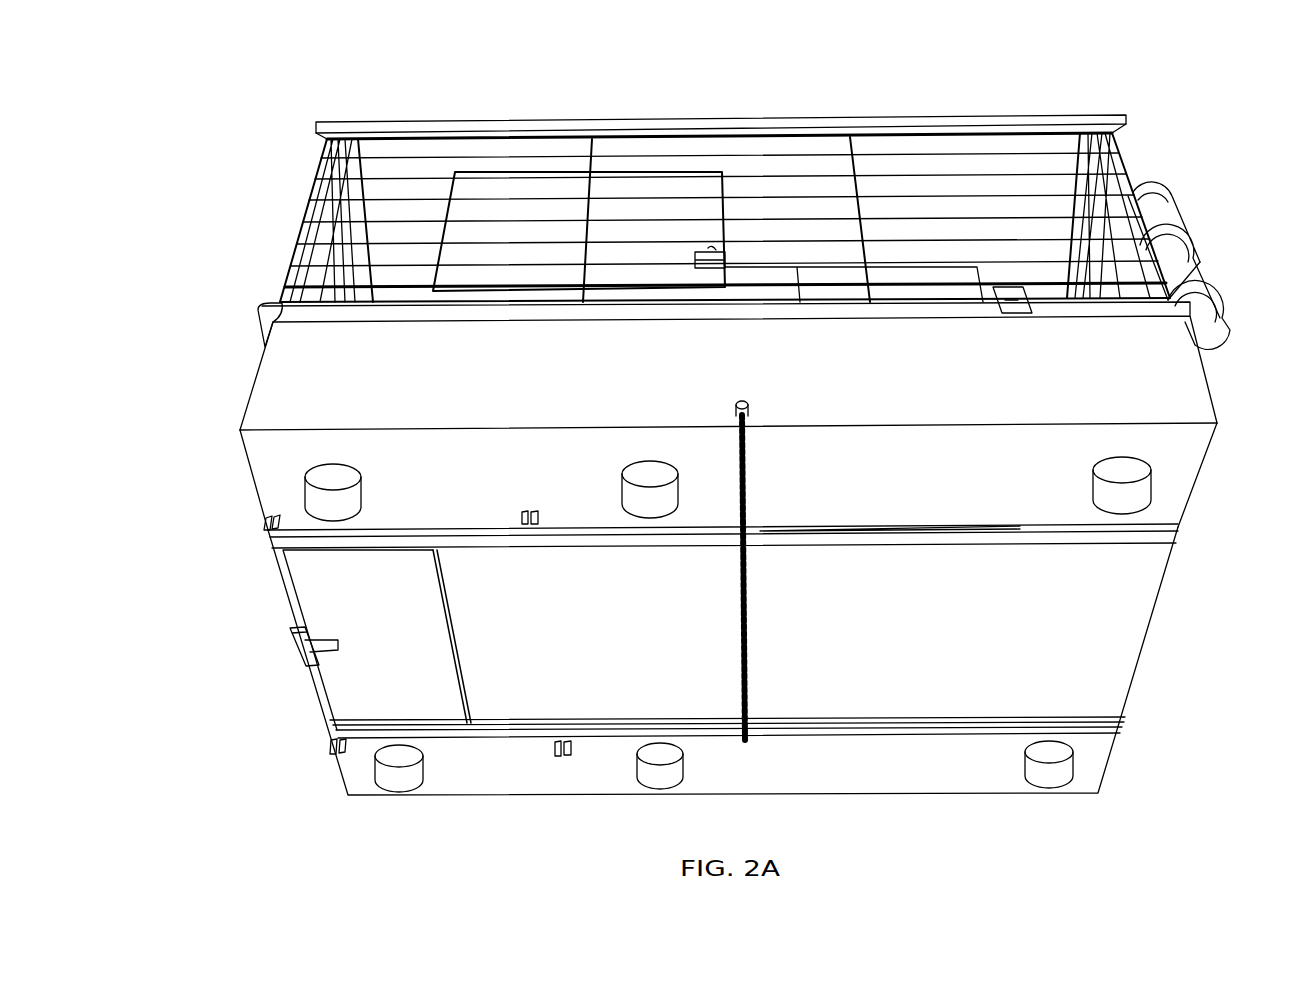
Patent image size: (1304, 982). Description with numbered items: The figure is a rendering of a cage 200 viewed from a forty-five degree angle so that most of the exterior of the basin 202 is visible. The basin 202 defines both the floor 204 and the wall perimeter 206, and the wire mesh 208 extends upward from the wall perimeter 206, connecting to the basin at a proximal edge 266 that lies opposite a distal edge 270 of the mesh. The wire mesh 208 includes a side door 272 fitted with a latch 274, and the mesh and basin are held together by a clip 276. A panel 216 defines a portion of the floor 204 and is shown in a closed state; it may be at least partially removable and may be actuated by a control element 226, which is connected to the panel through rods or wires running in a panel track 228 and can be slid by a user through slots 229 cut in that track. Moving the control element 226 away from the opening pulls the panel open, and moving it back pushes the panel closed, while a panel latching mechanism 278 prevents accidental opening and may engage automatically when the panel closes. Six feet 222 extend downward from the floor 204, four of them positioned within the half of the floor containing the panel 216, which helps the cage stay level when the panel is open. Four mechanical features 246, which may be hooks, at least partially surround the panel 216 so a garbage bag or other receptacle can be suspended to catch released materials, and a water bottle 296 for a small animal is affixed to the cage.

The cage 200 is at (1006, 90).
The basin 202 is at (238, 433).
The floor 204 is at (260, 487).
The wall perimeter 206 is at (262, 387).
The wire mesh 208 is at (298, 232).
The panel 216 is at (342, 697).
The feet 222 is at (333, 507).
The control element 226 is at (757, 408).
The panel track 228 is at (598, 543).
The slots 229 is at (922, 532).
The mechanical features 246 is at (527, 525).
The proximal edge 266 is at (278, 318).
The distal edge 270 is at (325, 150).
The side door 272 is at (725, 208).
The latch 274 is at (730, 255).
The clip 276 is at (1022, 315).
The panel latching mechanism 278 is at (293, 648).
The water bottle 296 is at (1197, 250).